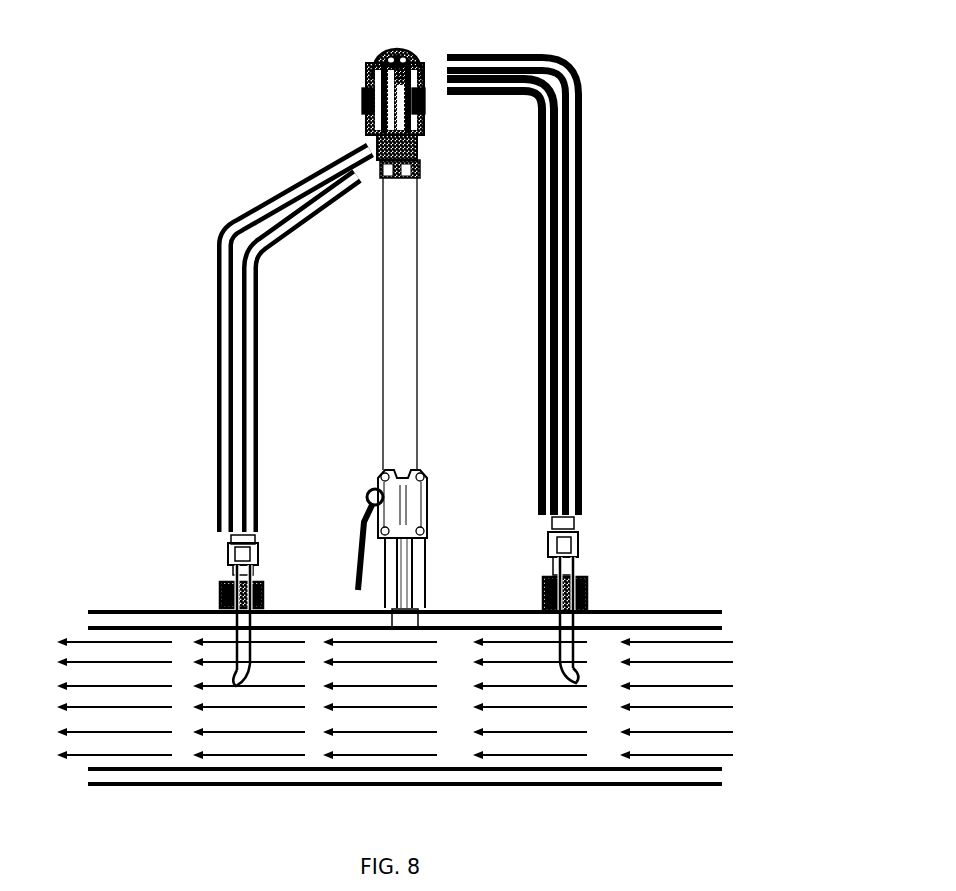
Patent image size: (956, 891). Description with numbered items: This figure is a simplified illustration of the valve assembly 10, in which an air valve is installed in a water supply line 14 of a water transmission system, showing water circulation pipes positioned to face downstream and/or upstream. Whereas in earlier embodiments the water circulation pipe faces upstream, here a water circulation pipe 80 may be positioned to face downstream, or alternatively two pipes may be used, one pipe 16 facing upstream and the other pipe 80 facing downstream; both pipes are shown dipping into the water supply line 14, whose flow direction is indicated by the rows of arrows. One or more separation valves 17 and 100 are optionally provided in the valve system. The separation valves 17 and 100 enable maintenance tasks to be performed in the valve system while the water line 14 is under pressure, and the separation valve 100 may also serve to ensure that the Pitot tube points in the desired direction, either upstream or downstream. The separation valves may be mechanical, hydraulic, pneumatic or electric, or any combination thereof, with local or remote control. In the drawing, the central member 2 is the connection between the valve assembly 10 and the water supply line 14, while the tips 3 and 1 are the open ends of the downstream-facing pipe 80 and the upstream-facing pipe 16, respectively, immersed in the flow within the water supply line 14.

The valve assembly 10 is at (366, 63).
The water supply line 14 is at (692, 612).
The separation valve 17 is at (430, 506).
The central port 2 is at (405, 596).
The separation valve 100 is at (233, 550).
The water circulation pipe 80 is at (233, 582).
The needle 3 is at (252, 629).
The pipe 16 is at (578, 585).
The needle 1 is at (579, 620).